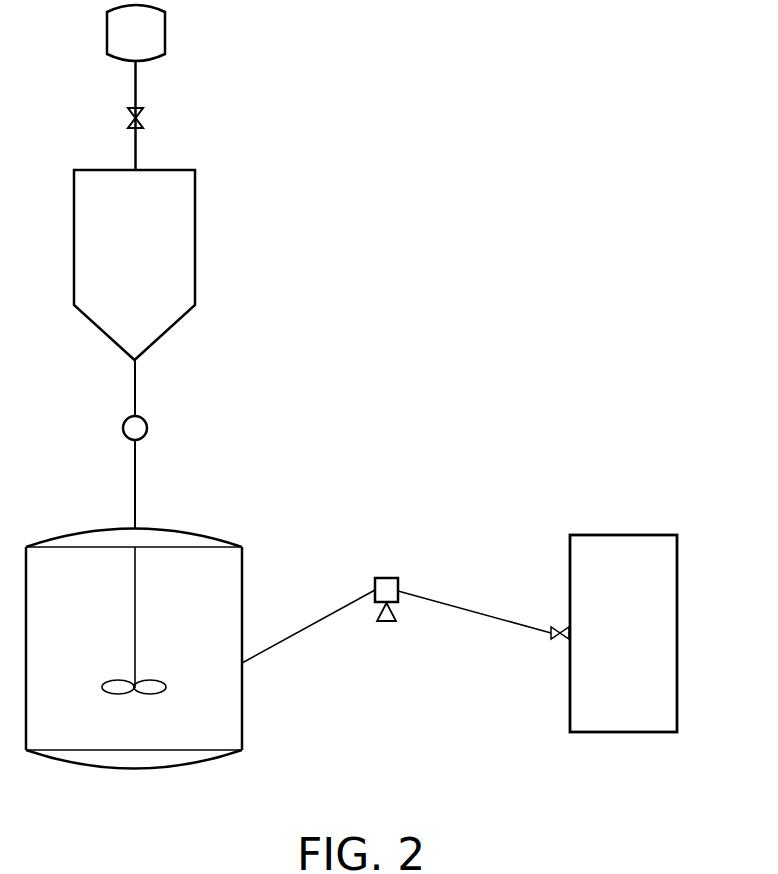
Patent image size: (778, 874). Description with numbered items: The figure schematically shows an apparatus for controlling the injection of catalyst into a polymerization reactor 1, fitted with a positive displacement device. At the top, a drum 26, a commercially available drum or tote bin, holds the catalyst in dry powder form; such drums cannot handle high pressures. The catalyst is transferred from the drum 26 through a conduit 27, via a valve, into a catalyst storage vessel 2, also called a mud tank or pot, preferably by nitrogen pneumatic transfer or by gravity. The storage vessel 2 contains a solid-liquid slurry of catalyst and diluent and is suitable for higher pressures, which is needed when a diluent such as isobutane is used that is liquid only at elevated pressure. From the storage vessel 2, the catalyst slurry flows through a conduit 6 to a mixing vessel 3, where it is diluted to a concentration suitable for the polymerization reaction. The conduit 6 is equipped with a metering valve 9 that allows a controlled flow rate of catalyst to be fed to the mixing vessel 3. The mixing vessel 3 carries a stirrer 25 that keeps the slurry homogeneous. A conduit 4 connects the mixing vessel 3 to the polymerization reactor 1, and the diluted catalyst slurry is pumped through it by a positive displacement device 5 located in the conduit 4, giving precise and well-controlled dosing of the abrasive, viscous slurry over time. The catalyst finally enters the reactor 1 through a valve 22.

The polymerization reactor 1 is at (632, 624).
The catalyst storage vessel 2 is at (141, 249).
The mixing vessel 3 is at (76, 612).
The conduit 4 is at (314, 625).
The positive displacement device 5 is at (388, 578).
The conduit 6 is at (136, 490).
The metering valve 9 is at (147, 428).
The valve 22 is at (551, 637).
The stirrer 25 is at (102, 686).
The drum 26 is at (157, 32).
The conduit 27 is at (136, 92).